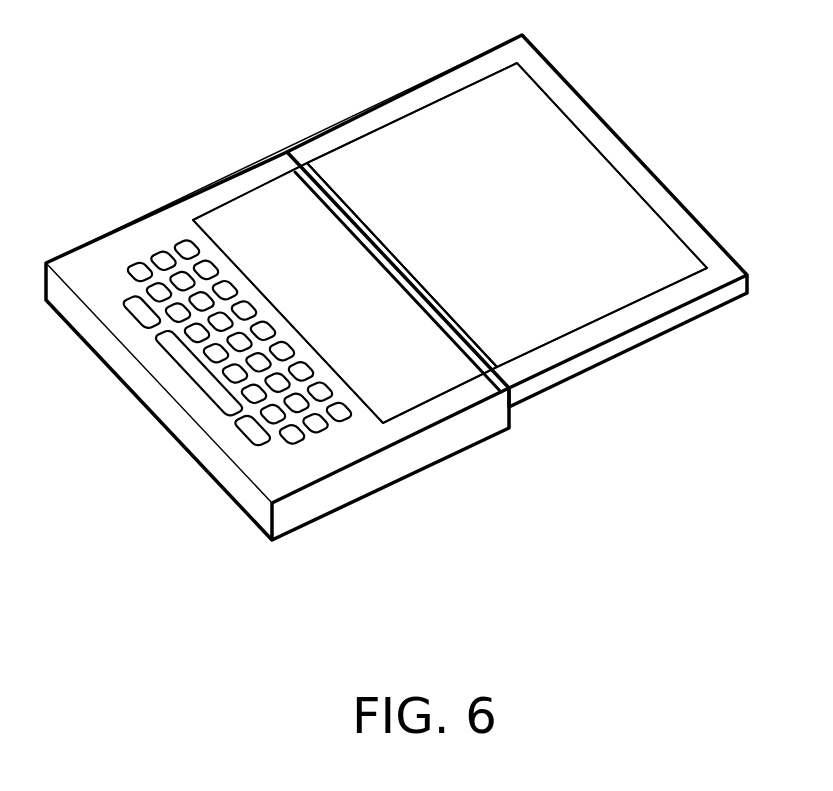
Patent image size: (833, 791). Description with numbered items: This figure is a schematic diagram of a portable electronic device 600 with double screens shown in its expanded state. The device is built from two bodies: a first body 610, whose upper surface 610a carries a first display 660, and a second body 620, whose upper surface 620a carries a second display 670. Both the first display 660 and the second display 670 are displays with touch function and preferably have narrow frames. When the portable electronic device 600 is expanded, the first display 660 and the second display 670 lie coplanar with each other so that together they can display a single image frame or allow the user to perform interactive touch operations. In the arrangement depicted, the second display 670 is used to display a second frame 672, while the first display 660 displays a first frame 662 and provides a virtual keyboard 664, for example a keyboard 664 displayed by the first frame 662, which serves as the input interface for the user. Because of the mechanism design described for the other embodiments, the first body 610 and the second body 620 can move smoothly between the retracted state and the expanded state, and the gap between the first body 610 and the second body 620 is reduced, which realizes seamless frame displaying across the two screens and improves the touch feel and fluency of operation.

The portable electronic device 600 is at (793, 603).
The first body 610 is at (327, 495).
The upper surface of the first body 610a is at (222, 185).
The second body 620 is at (613, 350).
The upper surface of the second body 620a is at (642, 312).
The first display 660 is at (410, 413).
The first frame 662 is at (430, 387).
The virtual keyboard 664 is at (190, 363).
The second display 670 is at (677, 285).
The second frame 672 is at (563, 158).